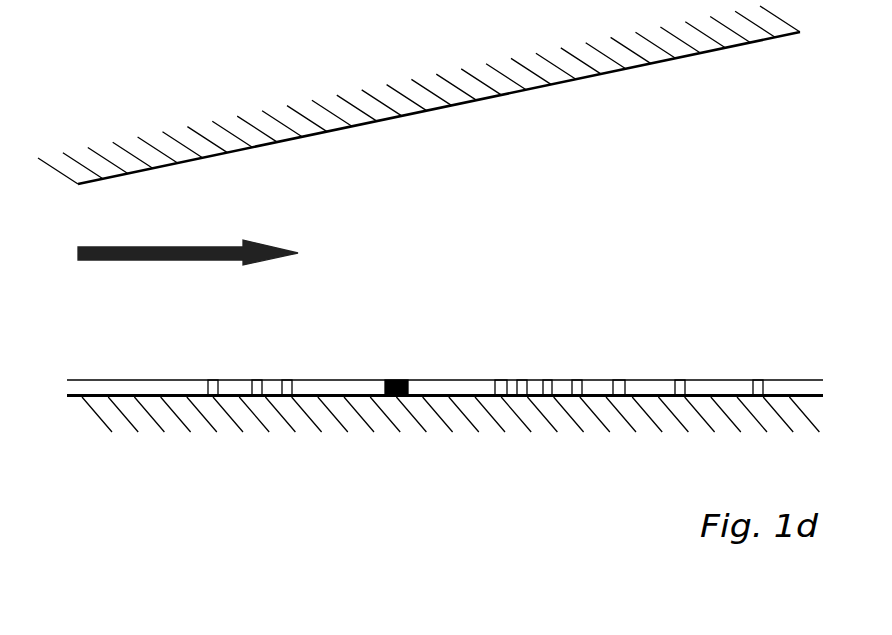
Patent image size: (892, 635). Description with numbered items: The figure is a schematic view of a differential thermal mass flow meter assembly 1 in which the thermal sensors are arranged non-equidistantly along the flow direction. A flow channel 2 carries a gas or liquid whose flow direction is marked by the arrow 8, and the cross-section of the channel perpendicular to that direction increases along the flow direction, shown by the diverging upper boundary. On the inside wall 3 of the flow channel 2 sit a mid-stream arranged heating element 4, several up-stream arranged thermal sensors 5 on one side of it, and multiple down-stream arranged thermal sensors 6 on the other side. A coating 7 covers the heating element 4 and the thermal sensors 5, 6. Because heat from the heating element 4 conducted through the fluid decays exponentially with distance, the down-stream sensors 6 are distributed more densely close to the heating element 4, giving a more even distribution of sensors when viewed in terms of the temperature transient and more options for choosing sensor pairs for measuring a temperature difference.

The differential thermal mass flow meter assembly 1 is at (450, 398).
The flow channel 2 is at (434, 174).
The inside wall 3 is at (780, 393).
The heating element 4 is at (400, 380).
The up-stream arranged thermal sensors 5 is at (288, 380).
The down-stream arranged thermal sensors 6 is at (758, 380).
The coating 7 is at (332, 388).
The arrow 8 is at (115, 244).